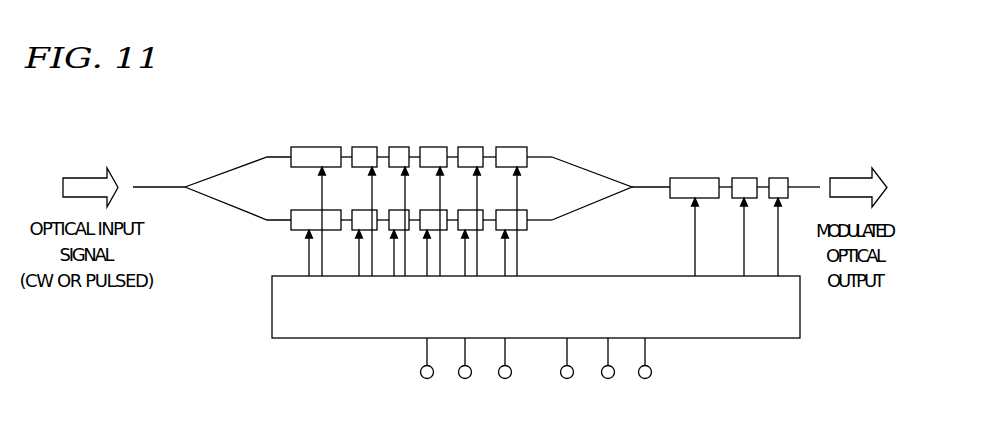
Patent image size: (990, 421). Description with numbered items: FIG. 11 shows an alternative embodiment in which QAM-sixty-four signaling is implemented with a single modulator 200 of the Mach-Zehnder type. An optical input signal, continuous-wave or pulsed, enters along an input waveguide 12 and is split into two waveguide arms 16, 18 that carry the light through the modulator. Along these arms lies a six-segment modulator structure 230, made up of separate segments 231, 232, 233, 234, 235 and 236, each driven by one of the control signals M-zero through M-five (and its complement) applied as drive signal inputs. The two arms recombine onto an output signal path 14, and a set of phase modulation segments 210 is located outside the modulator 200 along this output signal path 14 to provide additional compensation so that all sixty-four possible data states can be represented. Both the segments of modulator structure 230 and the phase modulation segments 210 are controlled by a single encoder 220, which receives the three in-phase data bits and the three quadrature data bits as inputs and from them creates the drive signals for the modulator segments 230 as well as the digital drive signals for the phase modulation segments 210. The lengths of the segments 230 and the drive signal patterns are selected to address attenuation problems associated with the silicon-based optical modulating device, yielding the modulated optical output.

The input optical waveguide 12 is at (158, 186).
The output signal path 14 is at (651, 186).
The first waveguide arm 16 is at (226, 166).
The second waveguide arm 18 is at (227, 208).
The modulator 200 is at (594, 101).
The phase modulation segments 210 is at (792, 168).
The encoder 220 is at (272, 306).
The six-segment modulator structure 230 is at (538, 90).
The segment 231 is at (318, 147).
The segment 232 is at (365, 147).
The segment 233 is at (399, 147).
The segment 234 is at (434, 147).
The segment 235 is at (471, 147).
The segment 236 is at (510, 147).